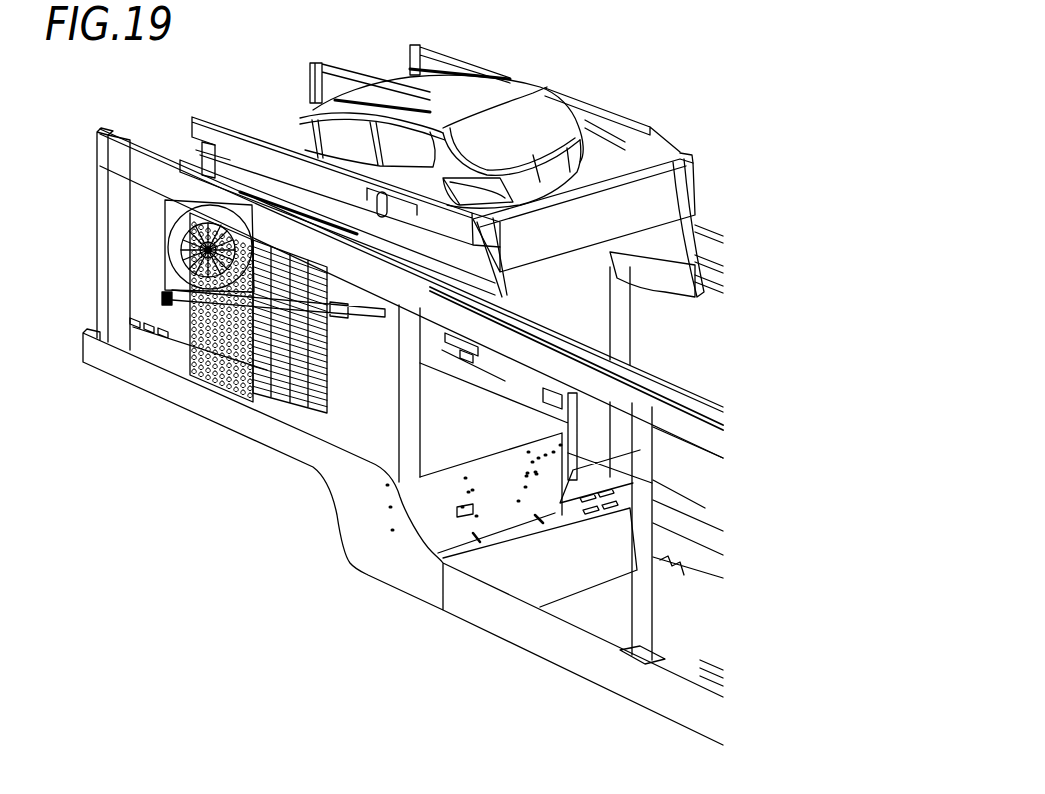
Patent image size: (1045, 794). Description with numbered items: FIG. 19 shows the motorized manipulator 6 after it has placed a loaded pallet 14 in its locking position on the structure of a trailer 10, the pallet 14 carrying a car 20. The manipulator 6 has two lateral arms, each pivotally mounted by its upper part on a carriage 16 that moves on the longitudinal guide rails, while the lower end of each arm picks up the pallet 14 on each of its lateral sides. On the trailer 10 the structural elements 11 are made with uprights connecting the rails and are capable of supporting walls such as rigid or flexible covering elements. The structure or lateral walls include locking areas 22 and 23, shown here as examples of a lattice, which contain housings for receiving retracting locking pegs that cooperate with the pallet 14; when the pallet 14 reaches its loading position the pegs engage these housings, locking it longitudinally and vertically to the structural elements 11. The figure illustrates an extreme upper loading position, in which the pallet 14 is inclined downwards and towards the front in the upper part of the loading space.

The motorized manipulator 6 is at (453, 348).
The trailer 10 is at (528, 658).
The structural elements 11 is at (655, 609).
The pallet 14 is at (165, 291).
The carriage 16 is at (699, 180).
The car 20 is at (391, 77).
The locking area 22 is at (187, 362).
The locking area 23 is at (268, 428).